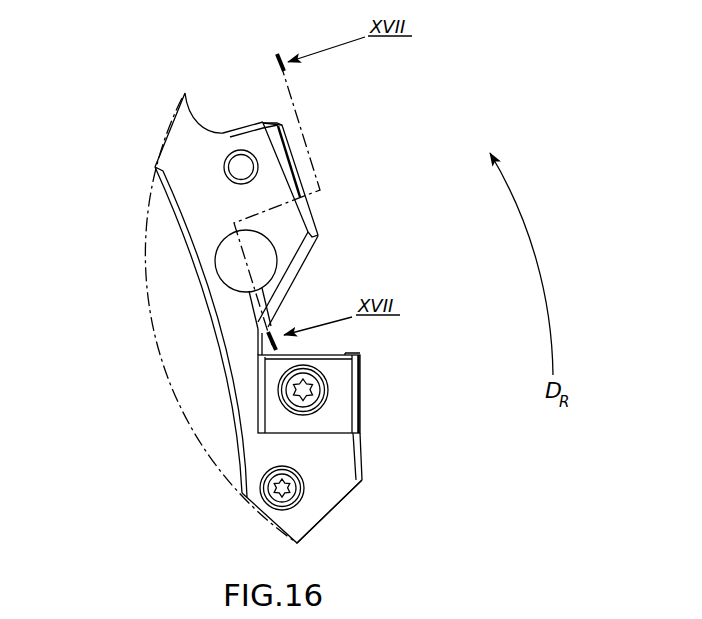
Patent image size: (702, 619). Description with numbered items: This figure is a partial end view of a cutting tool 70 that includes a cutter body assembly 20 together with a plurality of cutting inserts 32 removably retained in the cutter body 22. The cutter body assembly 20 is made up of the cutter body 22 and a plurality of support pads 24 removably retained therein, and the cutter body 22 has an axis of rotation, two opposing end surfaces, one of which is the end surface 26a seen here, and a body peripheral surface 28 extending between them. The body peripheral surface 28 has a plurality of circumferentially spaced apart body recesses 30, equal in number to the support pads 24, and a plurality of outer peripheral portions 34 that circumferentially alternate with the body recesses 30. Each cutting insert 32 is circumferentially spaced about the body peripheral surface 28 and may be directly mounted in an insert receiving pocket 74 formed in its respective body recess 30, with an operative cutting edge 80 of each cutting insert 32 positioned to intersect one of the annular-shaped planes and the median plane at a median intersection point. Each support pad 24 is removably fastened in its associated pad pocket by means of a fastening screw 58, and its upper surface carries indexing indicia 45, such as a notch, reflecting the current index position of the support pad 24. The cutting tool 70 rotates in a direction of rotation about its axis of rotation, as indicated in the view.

The cutting tool 70 is at (147, 188).
The cutter body 22 is at (175, 342).
The cutter body assembly 20 is at (207, 382).
The support pad 24 is at (228, 258).
The indexing indicia 45 is at (242, 287).
The cutting insert 32 is at (287, 139).
The operative cutting edge 80 is at (277, 120).
The body peripheral surface 28 is at (311, 207).
The body recess 30 is at (297, 298).
The insert receiving pocket 74 is at (288, 346).
The end surface 26a is at (328, 468).
The outer peripheral portion 34 is at (363, 455).
The fastening screw 58 is at (287, 492).